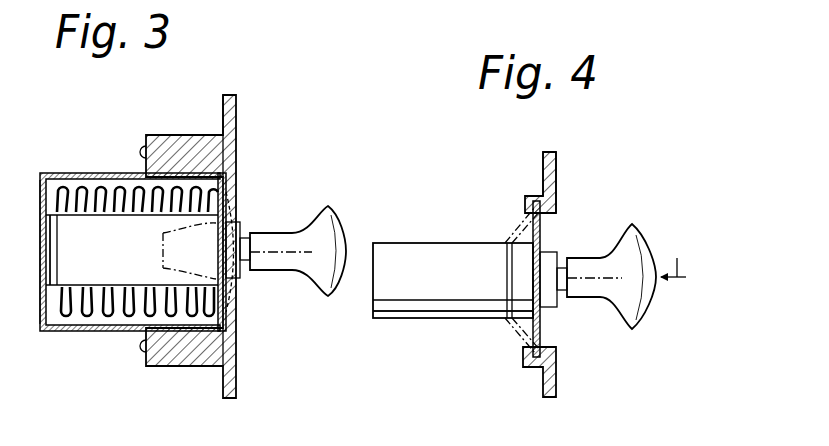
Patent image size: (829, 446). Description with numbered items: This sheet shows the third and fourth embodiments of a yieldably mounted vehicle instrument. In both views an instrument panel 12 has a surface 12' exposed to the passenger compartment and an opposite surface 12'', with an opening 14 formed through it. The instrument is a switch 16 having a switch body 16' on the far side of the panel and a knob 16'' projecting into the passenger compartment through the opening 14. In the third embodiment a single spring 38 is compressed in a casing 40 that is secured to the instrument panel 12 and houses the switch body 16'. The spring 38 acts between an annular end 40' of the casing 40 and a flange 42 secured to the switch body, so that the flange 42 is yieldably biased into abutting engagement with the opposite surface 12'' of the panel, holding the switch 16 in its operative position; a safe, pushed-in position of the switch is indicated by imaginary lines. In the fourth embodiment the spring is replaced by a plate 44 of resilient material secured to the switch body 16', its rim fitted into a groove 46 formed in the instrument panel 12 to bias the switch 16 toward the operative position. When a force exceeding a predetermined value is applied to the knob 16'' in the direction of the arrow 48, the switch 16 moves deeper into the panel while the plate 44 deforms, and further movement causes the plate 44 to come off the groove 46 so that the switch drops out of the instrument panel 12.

In FIG. 3, the instrument panel 12 is at (196, 219).
In FIG. 4, the instrument panel 12 is at (552, 250).
In FIG. 3, the surface 12' is at (251, 236).
In FIG. 4, the surface 12' is at (581, 178).
In FIG. 3, the opposite surface 12'' is at (198, 106).
In FIG. 4, the opposite surface 12'' is at (518, 168).
In FIG. 3, the opening 14 is at (229, 187).
In FIG. 4, the opening 14 is at (548, 346).
In FIG. 3, the switch 16 is at (132, 250).
In FIG. 4, the switch 16 is at (456, 280).
In FIG. 3, the switch body 16' is at (31, 250).
In FIG. 4, the switch body 16' is at (453, 339).
In FIG. 3, the knob 16'' is at (298, 276).
In FIG. 4, the knob 16'' is at (614, 298).
In FIG. 3, the spring 38 is at (105, 316).
In FIG. 3, the casing 40 is at (130, 228).
In FIG. 3, the annular end 40' is at (21, 252).
In FIG. 3, the flange 42 is at (232, 204).
In FIG. 4, the plate 44 is at (540, 248).
In FIG. 4, the groove 46 is at (541, 218).
In FIG. 4, the arrow 48 is at (673, 249).